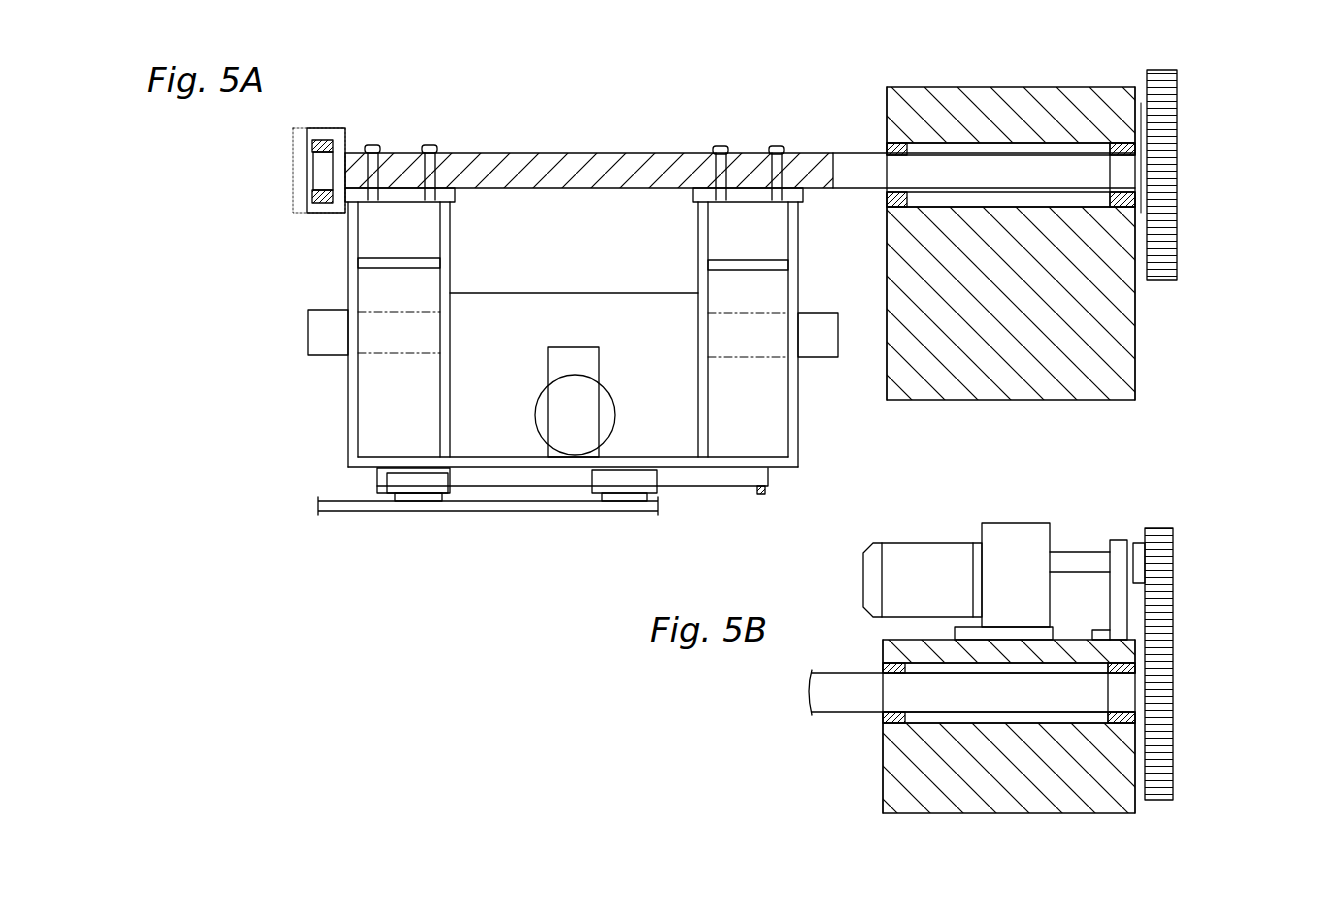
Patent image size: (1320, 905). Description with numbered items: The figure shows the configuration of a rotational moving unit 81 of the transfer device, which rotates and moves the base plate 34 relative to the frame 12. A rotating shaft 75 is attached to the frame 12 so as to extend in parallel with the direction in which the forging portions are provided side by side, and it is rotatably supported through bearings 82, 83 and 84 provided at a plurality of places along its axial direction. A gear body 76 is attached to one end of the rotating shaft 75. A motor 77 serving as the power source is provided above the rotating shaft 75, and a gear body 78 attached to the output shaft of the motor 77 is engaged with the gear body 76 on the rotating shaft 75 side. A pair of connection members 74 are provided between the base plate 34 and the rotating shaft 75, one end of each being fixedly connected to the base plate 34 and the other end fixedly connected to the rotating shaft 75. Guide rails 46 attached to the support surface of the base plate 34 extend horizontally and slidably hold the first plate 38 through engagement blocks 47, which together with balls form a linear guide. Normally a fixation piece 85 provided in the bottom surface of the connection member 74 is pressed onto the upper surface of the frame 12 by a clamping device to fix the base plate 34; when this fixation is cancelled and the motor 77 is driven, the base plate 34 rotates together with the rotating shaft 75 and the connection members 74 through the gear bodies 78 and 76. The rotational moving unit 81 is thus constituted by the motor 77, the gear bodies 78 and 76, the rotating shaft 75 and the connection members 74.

In FIG. 5A, the frame 12 is at (1085, 326).
In FIG. 5B, the frame 12 is at (920, 775).
In FIG. 5A, the base plate 34 is at (760, 494).
In FIG. 5A, the first plate 38 is at (375, 514).
In FIG. 5A, the guide rails 46 is at (712, 488).
In FIG. 5A, the engagement blocks 47 is at (430, 492).
In FIG. 5A, the connection members 74 is at (338, 404).
In FIG. 5A, the rotating shaft 75 is at (572, 151).
In FIG. 5B, the rotating shaft 75 is at (843, 690).
In FIG. 5A, the gear body 76 is at (1180, 80).
In FIG. 5B, the gear body 76 is at (1165, 667).
In FIG. 5B, the motor 77 is at (920, 553).
In FIG. 5B, the gear body 78 is at (1165, 545).
In FIG. 5A, the rotational moving unit 81 is at (697, 110).
In FIG. 5A, the bearing 82 is at (332, 128).
In FIG. 5A, the bearing 83 is at (900, 132).
In FIG. 5B, the bearing 83 is at (883, 720).
In FIG. 5A, the bearing 84 is at (1120, 142).
In FIG. 5B, the bearing 84 is at (1165, 735).
In FIG. 5A, the fixation piece 85 is at (322, 310).